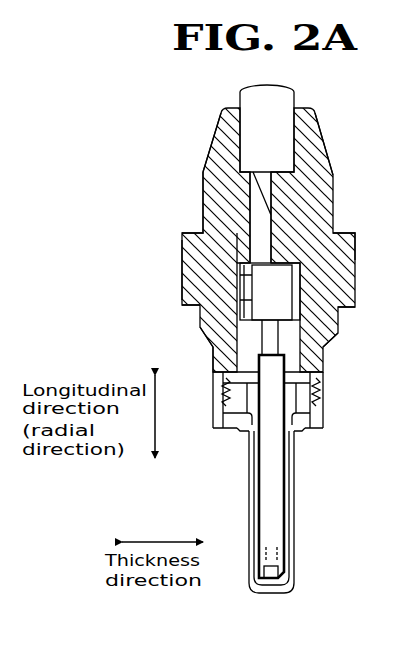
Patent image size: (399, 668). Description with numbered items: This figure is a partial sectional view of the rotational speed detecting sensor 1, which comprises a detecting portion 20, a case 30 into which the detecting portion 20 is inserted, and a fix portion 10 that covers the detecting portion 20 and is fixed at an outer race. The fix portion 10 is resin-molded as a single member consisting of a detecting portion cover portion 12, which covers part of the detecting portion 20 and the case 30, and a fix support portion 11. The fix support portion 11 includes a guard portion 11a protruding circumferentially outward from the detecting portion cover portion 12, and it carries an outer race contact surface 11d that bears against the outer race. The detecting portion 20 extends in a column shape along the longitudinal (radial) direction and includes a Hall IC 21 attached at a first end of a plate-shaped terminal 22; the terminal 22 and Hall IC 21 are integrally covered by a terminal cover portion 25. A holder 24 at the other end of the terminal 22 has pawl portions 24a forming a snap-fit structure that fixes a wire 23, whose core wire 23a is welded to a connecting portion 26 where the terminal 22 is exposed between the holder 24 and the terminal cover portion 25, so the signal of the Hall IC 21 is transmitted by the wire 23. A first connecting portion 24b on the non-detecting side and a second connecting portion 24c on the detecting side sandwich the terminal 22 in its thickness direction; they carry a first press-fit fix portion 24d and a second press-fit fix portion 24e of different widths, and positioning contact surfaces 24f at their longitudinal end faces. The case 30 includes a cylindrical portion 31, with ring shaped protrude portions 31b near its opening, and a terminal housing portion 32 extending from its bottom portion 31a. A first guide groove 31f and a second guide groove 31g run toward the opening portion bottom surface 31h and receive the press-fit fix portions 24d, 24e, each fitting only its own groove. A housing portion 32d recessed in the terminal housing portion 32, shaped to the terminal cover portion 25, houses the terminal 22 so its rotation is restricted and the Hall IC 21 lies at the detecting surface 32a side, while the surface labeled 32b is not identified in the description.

The rotational speed detecting sensor 1 is at (323, 124).
The fix portion 10 is at (336, 192).
The fix support portion 11 is at (182, 256).
The guard portion 11a is at (353, 260).
The outer race contact surface 11d is at (181, 306).
The detecting portion cover portion 12 is at (335, 156).
The detecting portion 20 is at (286, 496).
The Hall IC 21 is at (265, 578).
The terminal 22 is at (274, 232).
The wire 23 is at (256, 172).
The core wire 23a is at (228, 338).
The holder 24 is at (240, 290).
The pawl portions 24a is at (247, 265).
The first connecting portion 24b is at (325, 344).
The second connecting portion 24c is at (212, 350).
The first press-fit fix portion 24d is at (322, 375).
The second press-fit fix portion 24e is at (220, 376).
The positioning contact surfaces 24f is at (222, 428).
The terminal cover portion 25 is at (286, 549).
The connecting portion 26 is at (270, 309).
The case 30 is at (248, 470).
The cylindrical portion 31 is at (322, 430).
The bottom portion 31a is at (238, 433).
The ring shaped protrude portions 31b is at (220, 392).
The first guide groove 31f is at (324, 412).
The second guide groove 31g is at (222, 414).
The opening portion bottom surface 31h is at (271, 407).
The terminal housing portion 32 is at (292, 513).
The detecting surface 32a is at (250, 534).
The inner cover bottom 32b is at (294, 537).
The housing portion 32d is at (258, 498).